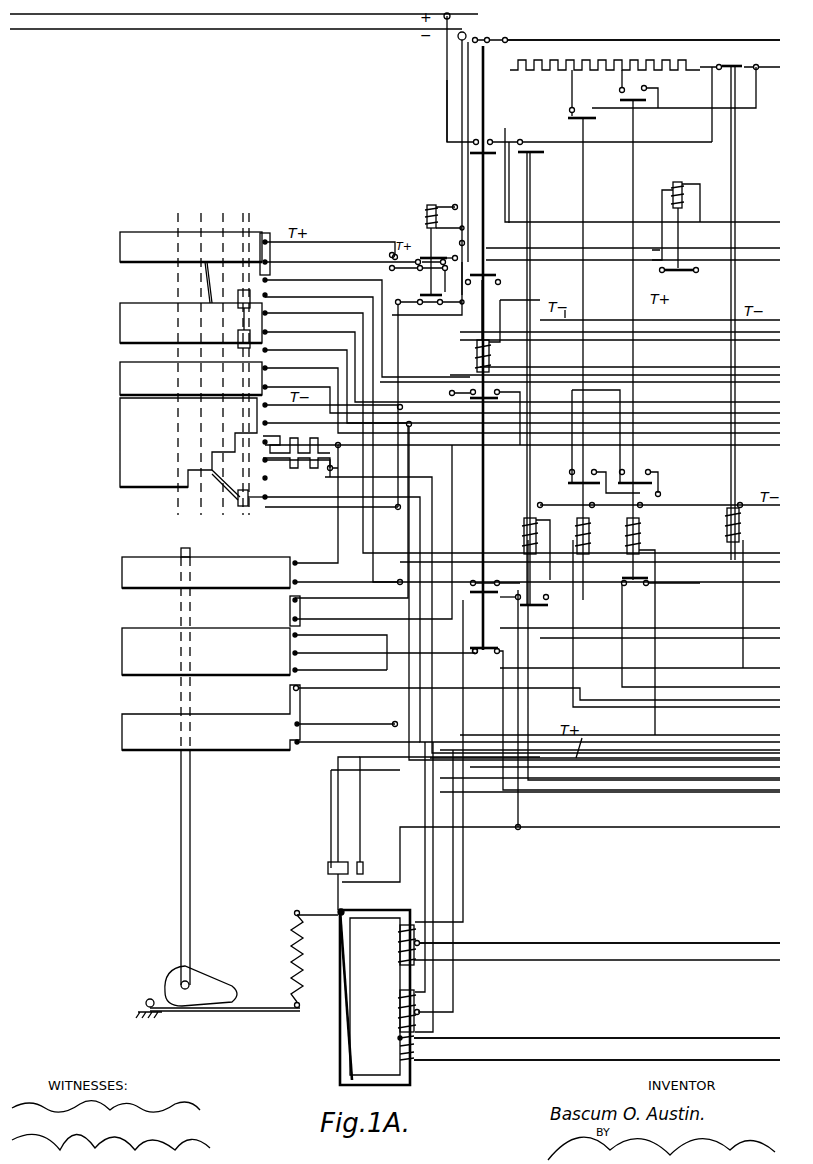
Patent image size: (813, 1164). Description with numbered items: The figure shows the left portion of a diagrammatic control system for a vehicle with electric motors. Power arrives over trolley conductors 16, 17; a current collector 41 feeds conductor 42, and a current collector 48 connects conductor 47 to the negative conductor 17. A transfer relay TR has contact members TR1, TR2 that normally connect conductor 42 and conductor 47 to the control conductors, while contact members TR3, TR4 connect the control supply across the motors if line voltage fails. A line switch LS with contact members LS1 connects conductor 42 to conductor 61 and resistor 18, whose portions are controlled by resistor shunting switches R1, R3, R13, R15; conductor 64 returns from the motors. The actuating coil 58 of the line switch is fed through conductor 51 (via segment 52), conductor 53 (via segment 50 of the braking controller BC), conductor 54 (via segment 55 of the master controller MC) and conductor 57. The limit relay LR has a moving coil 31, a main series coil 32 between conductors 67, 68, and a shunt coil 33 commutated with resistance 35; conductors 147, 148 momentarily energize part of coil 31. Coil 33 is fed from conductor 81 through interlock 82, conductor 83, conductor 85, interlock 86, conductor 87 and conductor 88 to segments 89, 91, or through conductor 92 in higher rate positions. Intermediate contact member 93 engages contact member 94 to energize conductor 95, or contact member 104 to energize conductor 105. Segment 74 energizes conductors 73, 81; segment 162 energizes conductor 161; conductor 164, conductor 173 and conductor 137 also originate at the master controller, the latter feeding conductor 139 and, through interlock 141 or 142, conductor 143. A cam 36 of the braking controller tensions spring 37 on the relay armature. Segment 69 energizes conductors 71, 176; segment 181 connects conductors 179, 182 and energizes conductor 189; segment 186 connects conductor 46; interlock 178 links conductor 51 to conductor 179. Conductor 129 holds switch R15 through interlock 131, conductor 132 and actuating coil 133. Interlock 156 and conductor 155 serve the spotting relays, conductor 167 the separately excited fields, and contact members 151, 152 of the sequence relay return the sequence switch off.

The trolley conductor 16 is at (338, 14).
The trolley conductor 17 is at (382, 14).
The current collector 41 is at (451, 19).
The current collector 48 is at (461, 40).
The contact member 152 is at (480, 40).
The conductor 64 is at (770, 40).
The conductor 42 is at (446, 82).
The resistor 18 is at (645, 60).
The resistor shunting switch R1 is at (758, 58).
The resistor shunting switch R13 is at (618, 136).
The resistor shunting switch R3 is at (660, 136).
The conductor 61 is at (505, 128).
The contact members of line switch LS1 is at (591, 348).
The resistor shunting switch R15 is at (541, 378).
The conductor 47 is at (460, 180).
The transfer relay TR is at (415, 203).
The contact members of transfer relay TR1 is at (442, 249).
The contact members of transfer relay TR2 is at (438, 281).
The contact members of transfer relay TR3 is at (417, 268).
The contact members of transfer relay TR4 is at (428, 386).
The line switch LS is at (510, 239).
The interlock 156 is at (492, 270).
The segment 52 is at (685, 231).
The conductor 167 is at (780, 260).
The actuating coil 58 is at (490, 352).
The interlock 82 is at (452, 398).
The conductor 161 is at (290, 284).
The conductor 164 is at (760, 368).
The conductor 73 is at (522, 431).
The conductor 173 is at (522, 425).
The conductor 81 is at (522, 359).
The conductor 137 is at (522, 380).
The conductor 54 is at (522, 397).
The conductor 53 is at (522, 484).
The conductor 46 is at (338, 530).
The resistance 35 is at (300, 456).
The conductor 88 is at (522, 679).
The master controller MC is at (232, 189).
The contact segment 162 is at (120, 243).
The segment 74 is at (120, 322).
The segment 55 is at (120, 374).
The segment 91 is at (120, 441).
The segment 89 is at (240, 508).
The braking controller BC is at (258, 548).
The segment 186 is at (122, 570).
The segment 50 is at (290, 608).
The conductor 51 is at (660, 796).
The contact segment 181 is at (122, 652).
The conductor 182 is at (341, 644).
The conductor 179 is at (386, 645).
The conductor 189 is at (772, 620).
The contact segment 69 is at (122, 729).
The conductor 71 is at (539, 686).
The conductor 176 is at (538, 729).
The cam 36 is at (214, 972).
The spring 37 is at (292, 954).
The limit relay LR is at (380, 903).
The contact member 104 is at (328, 870).
The intermediate contact member 93 is at (338, 862).
The contact member 94 is at (370, 845).
The conductor 95 is at (370, 811).
The conductor 105 is at (331, 800).
The conductor 83 is at (404, 852).
The conductor 87 is at (462, 716).
The conductor 92 is at (433, 887).
The conductor 148 is at (460, 890).
The moving coil 31 is at (400, 946).
The conductor 147 is at (599, 933).
The shunt coil 33 is at (400, 1012).
The main series coil 32 is at (400, 1052).
The conductor 68 is at (597, 1028).
The conductor 67 is at (597, 1050).
The conductor 155 is at (620, 327).
The contact member 151 is at (630, 356).
The conductor 57 is at (728, 380).
The conductor 139 is at (668, 384).
The interlock 141 is at (568, 484).
The interlock 142 is at (654, 484).
The actuating coil 133 is at (538, 531).
The conductor 143 is at (650, 532).
The conductor 132 is at (532, 574).
The interlock 131 is at (540, 606).
The interlock 86 is at (488, 595).
The interlock 178 is at (621, 719).
The conductor 85 is at (640, 655).
The conductor 129 is at (660, 660).